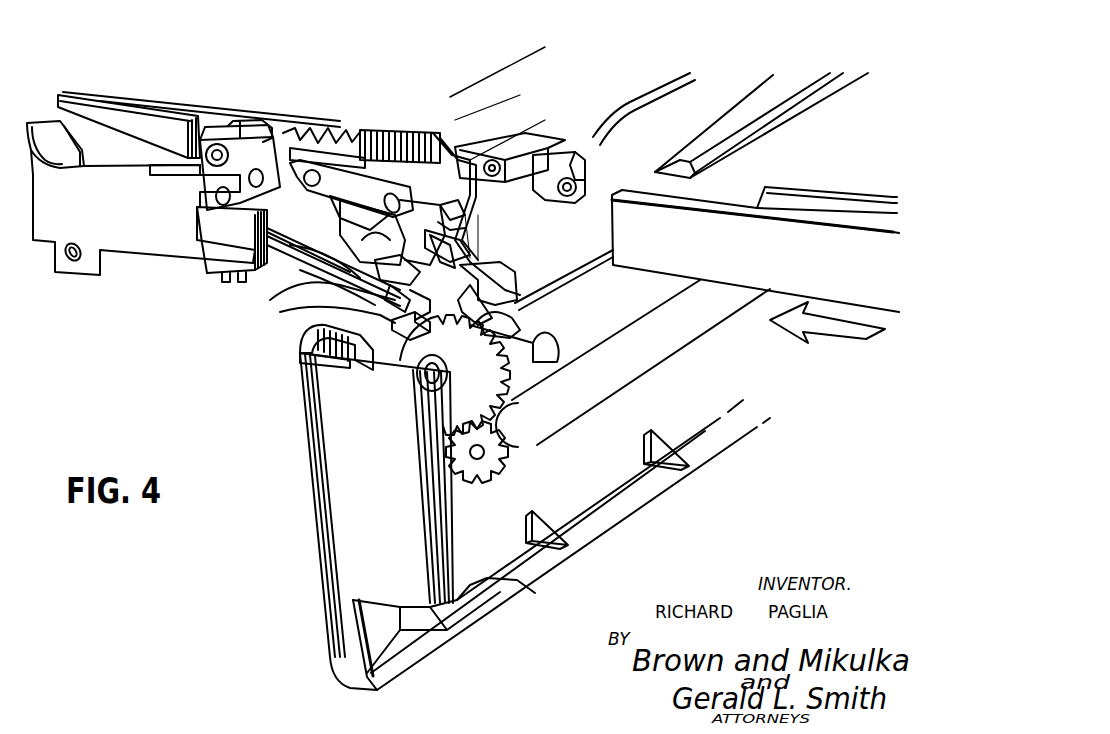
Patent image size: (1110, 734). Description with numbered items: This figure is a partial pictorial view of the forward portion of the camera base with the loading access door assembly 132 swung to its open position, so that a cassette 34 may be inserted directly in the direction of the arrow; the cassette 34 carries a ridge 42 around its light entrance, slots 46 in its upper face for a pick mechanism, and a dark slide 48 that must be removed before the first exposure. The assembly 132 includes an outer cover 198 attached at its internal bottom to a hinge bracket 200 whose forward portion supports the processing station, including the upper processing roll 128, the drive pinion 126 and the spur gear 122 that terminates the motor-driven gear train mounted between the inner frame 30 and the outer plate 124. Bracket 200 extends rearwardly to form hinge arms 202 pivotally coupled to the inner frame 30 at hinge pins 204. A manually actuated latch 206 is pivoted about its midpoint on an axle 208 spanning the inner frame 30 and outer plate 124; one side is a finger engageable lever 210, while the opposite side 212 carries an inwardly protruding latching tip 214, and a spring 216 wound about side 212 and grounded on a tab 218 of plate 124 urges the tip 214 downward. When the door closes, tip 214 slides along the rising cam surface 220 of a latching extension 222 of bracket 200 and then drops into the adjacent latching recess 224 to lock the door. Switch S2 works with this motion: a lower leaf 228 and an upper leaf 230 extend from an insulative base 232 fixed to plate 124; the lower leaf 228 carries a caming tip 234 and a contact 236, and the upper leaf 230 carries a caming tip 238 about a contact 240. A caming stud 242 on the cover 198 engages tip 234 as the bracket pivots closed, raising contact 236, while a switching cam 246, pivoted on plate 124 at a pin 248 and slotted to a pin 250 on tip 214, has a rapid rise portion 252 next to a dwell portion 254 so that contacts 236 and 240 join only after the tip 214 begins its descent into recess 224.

The inner frame 30 is at (225, 130).
The cassette 34 is at (747, 302).
The ridge 42 is at (840, 173).
The slots 46 is at (730, 197).
The dark slide 48 is at (740, 186).
The spur gear 122 is at (470, 422).
The outer plate 124 is at (160, 236).
The drive pinion 126 is at (512, 468).
The processing roll 128 is at (617, 383).
The loading access door assembly 132 is at (333, 521).
The outer cover 198 is at (345, 597).
The hinge bracket 200 is at (483, 256).
The hinge arms 202 is at (453, 240).
The hinge pins 204 is at (442, 223).
The latch 206 is at (198, 94).
The axle 208 is at (243, 120).
The finger engageable lever 210 is at (140, 97).
The side 212 is at (337, 140).
The latching tip 214 is at (420, 157).
The spring 216 is at (283, 135).
The tab 218 is at (393, 170).
The cam surface 220 is at (477, 267).
The latching extension 222 is at (493, 302).
The latching recess 224 is at (507, 320).
The lower leaf 228 is at (263, 287).
The upper leaf 230 is at (297, 248).
The insulative base 232 is at (233, 250).
The caming tip 234 is at (410, 343).
The contact 236 is at (355, 362).
The caming tip 238 is at (300, 258).
The contact 240 is at (340, 297).
The caming stud 242 is at (303, 380).
The switching cam 246 is at (480, 153).
The pin 248 is at (353, 140).
The pin 250 is at (423, 157).
The rapid rise portion 252 is at (287, 297).
The dwell portion 254 is at (280, 310).
The switch S2 is at (213, 302).